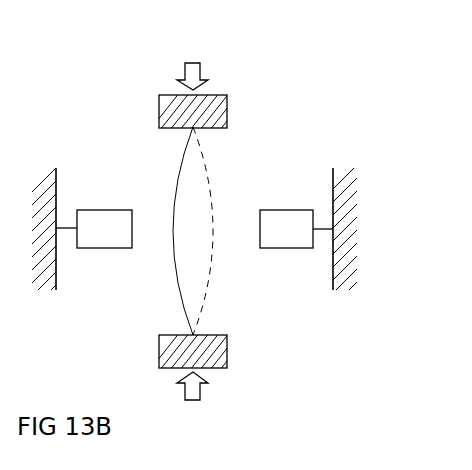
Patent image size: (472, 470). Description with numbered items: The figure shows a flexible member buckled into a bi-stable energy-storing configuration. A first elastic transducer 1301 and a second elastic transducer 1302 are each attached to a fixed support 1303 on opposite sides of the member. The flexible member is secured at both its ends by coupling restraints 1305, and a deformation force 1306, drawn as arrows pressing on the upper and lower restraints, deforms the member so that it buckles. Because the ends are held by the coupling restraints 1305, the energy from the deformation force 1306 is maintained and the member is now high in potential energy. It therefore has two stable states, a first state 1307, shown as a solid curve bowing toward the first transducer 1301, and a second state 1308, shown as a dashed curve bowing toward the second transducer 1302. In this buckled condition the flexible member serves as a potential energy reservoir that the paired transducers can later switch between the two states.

The first elastic transducer 1301 is at (117, 253).
The second elastic transducer 1302 is at (296, 248).
The fixed support 1303 is at (32, 165).
The coupling restraints 1305 is at (235, 110).
The deformation force 1306 is at (207, 69).
The first stable state 1307 is at (173, 183).
The second stable state 1308 is at (222, 205).